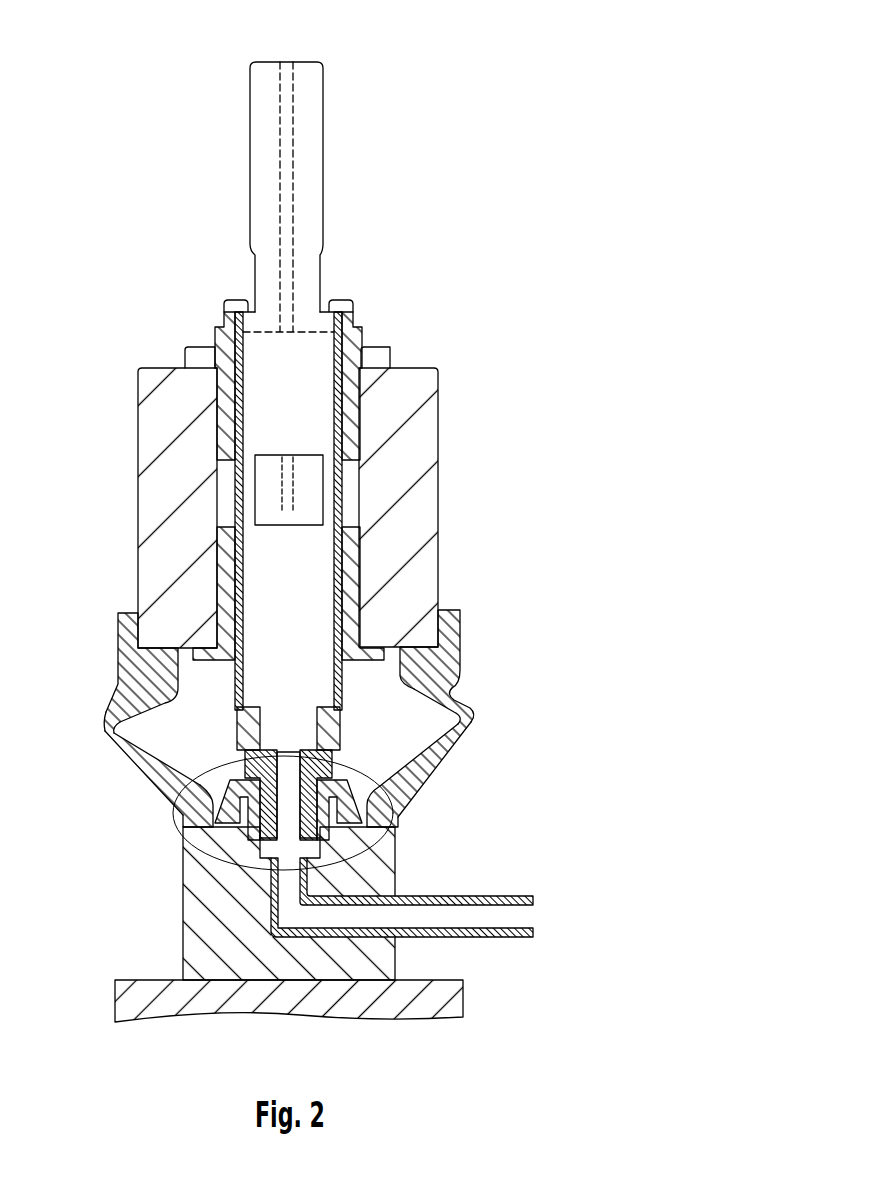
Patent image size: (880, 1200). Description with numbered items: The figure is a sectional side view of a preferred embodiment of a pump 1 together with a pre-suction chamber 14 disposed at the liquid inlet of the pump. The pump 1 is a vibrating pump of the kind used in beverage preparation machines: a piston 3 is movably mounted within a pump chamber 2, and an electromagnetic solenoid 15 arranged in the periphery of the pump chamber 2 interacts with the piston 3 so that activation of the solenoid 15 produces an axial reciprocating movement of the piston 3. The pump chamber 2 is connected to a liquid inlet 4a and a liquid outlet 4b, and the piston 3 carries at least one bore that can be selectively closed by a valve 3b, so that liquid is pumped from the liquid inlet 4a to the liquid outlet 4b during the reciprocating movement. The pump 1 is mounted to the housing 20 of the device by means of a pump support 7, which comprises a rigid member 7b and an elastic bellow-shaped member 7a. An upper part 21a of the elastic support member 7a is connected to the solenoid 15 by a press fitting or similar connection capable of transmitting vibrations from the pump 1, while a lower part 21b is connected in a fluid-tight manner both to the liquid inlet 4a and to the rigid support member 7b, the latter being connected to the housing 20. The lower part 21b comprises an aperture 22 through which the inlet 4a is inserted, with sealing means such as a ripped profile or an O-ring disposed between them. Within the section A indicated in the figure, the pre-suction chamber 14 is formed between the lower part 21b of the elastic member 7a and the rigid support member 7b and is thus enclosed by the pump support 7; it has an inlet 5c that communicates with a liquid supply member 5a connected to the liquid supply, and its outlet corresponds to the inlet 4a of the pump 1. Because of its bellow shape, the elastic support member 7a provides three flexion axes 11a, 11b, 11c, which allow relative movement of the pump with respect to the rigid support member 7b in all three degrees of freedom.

The pump 1 is at (385, 347).
The pump chamber 2 is at (342, 543).
The piston 3 is at (312, 488).
The valve 3b is at (285, 492).
The liquid inlet 4a is at (262, 845).
The liquid outlet 4b is at (290, 62).
The liquid supply member 5a is at (488, 913).
The inlet of the pre-suction chamber 5c is at (272, 858).
The pump support 7 is at (167, 787).
The elastic bellow-shaped support member 7a is at (113, 735).
The rigid support member 7b is at (363, 967).
The flexion axis 11a is at (428, 668).
The flexion axis 11b is at (473, 713).
The flexion axis 11c is at (397, 798).
The pre-suction chamber 14 is at (348, 822).
The electromagnetic solenoid 15 is at (425, 383).
The housing 20 is at (280, 1003).
The upper part of the elastic support member 21a is at (118, 622).
The lower part of the elastic support member 21b is at (188, 817).
The aperture 22 is at (270, 813).
The section A is at (385, 840).